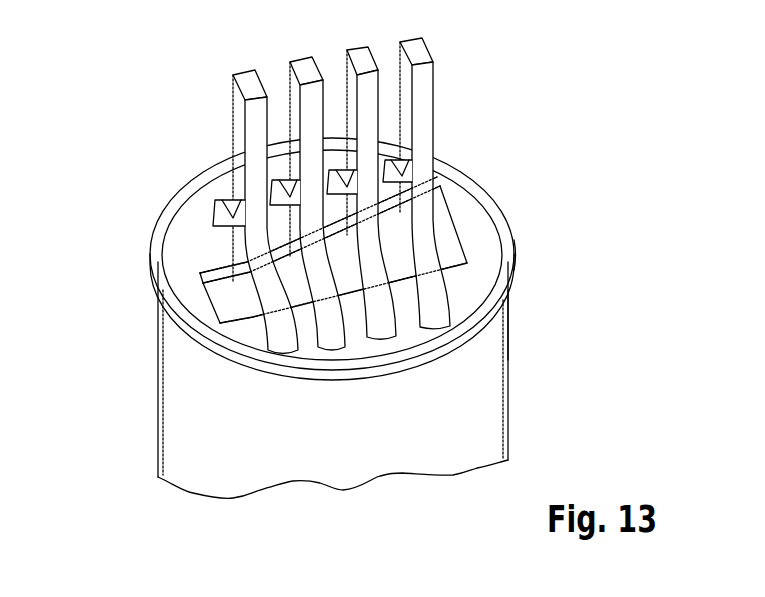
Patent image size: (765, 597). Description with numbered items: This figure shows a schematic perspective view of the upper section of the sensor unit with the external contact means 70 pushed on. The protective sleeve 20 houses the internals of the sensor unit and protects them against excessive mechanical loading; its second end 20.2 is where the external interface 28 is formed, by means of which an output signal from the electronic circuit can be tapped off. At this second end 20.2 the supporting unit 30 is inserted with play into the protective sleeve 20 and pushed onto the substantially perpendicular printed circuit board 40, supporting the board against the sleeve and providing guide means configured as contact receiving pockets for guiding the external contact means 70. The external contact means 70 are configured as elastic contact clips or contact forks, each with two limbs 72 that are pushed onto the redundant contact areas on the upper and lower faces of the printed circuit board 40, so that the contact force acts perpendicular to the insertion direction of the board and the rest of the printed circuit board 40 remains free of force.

The protective sleeve 20 is at (177, 375).
The second end of the protective sleeve 20.2 is at (529, 327).
The external interface 28 is at (505, 255).
The supporting unit 30 is at (479, 223).
The printed circuit board 40 is at (214, 281).
The external contact means 70 is at (221, 67).
The limbs 72 is at (200, 250).